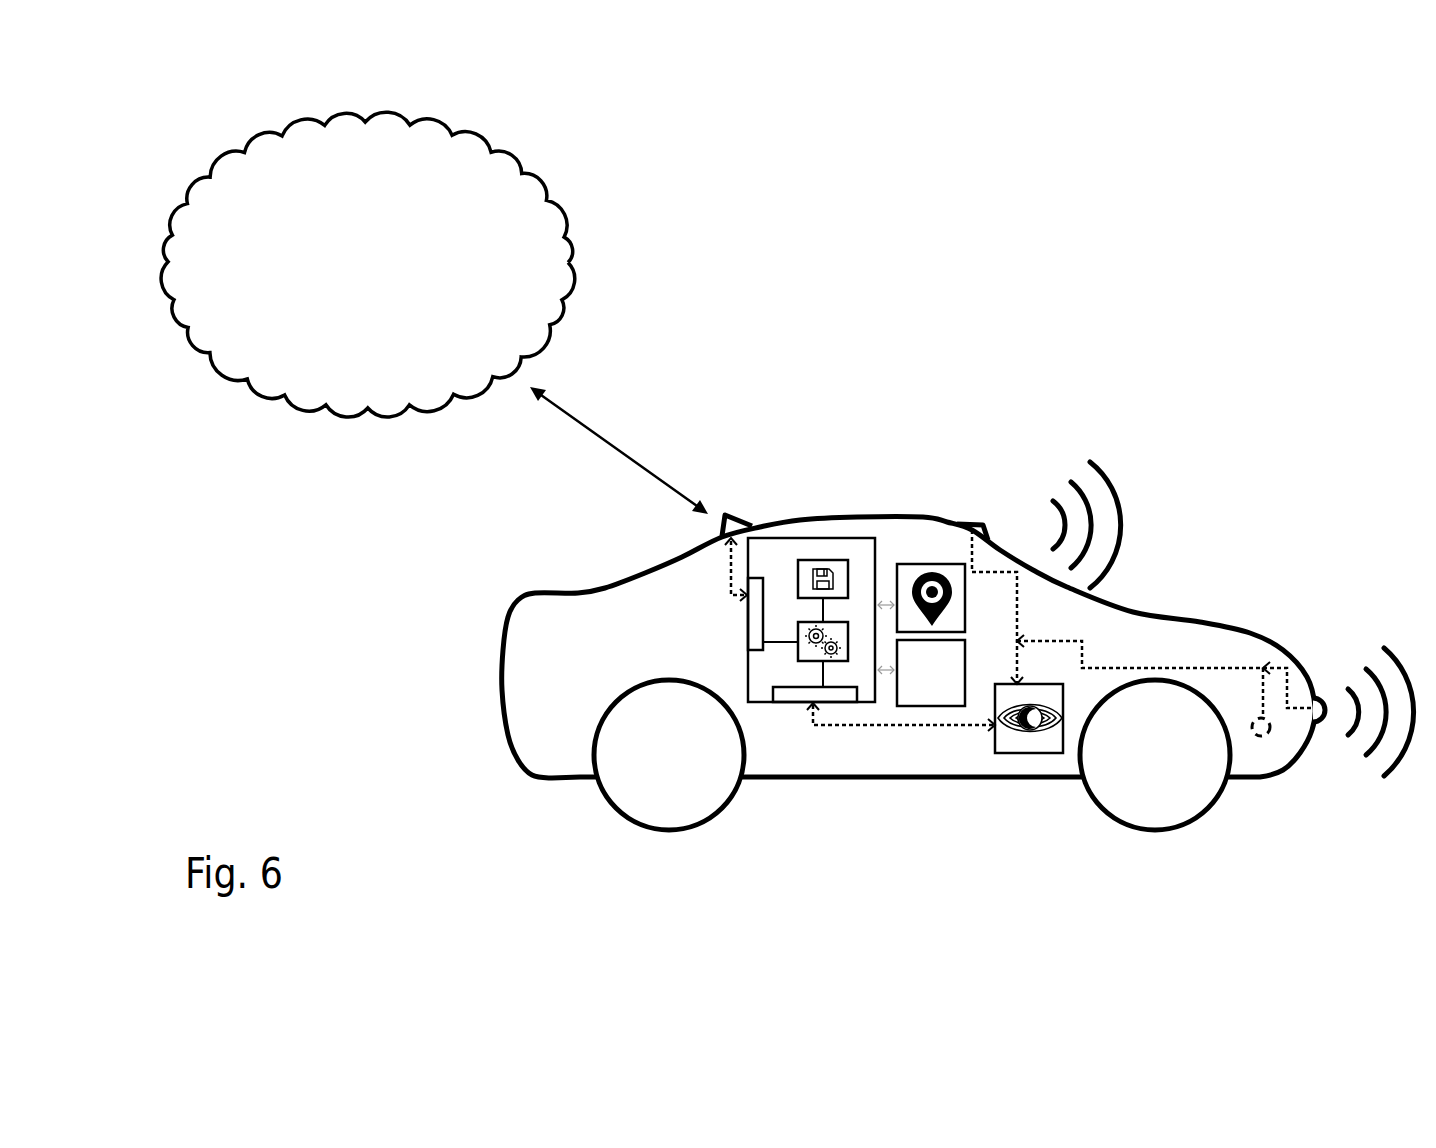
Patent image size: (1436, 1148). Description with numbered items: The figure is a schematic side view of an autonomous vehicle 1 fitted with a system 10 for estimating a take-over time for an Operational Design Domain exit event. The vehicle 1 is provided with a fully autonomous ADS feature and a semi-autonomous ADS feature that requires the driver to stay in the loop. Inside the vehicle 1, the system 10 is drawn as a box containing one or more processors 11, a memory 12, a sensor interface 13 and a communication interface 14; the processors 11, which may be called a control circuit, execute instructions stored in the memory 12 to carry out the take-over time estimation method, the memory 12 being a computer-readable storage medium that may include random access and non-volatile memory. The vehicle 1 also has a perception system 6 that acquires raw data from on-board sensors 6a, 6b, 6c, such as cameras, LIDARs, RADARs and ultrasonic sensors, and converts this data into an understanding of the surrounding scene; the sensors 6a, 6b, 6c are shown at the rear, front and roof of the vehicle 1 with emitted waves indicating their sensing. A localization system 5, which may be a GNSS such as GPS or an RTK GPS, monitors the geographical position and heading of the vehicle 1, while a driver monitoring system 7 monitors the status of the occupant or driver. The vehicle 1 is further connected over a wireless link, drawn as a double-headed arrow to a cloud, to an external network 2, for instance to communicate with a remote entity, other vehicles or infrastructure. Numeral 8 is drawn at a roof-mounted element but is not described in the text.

The autonomous vehicle 1 is at (523, 770).
The external network 2 is at (517, 147).
The localization system 5 is at (918, 564).
The perception system 6 is at (1043, 753).
The sensor 6a is at (1266, 736).
The sensor 6b is at (1324, 700).
The sensor 6c is at (980, 530).
The driver monitoring system 7 is at (924, 706).
The communication unit 8 is at (735, 517).
The system 10 is at (803, 538).
The processor 11 is at (850, 645).
The memory 12 is at (823, 560).
The sensor interface 13 is at (797, 700).
The communication interface 14 is at (752, 630).